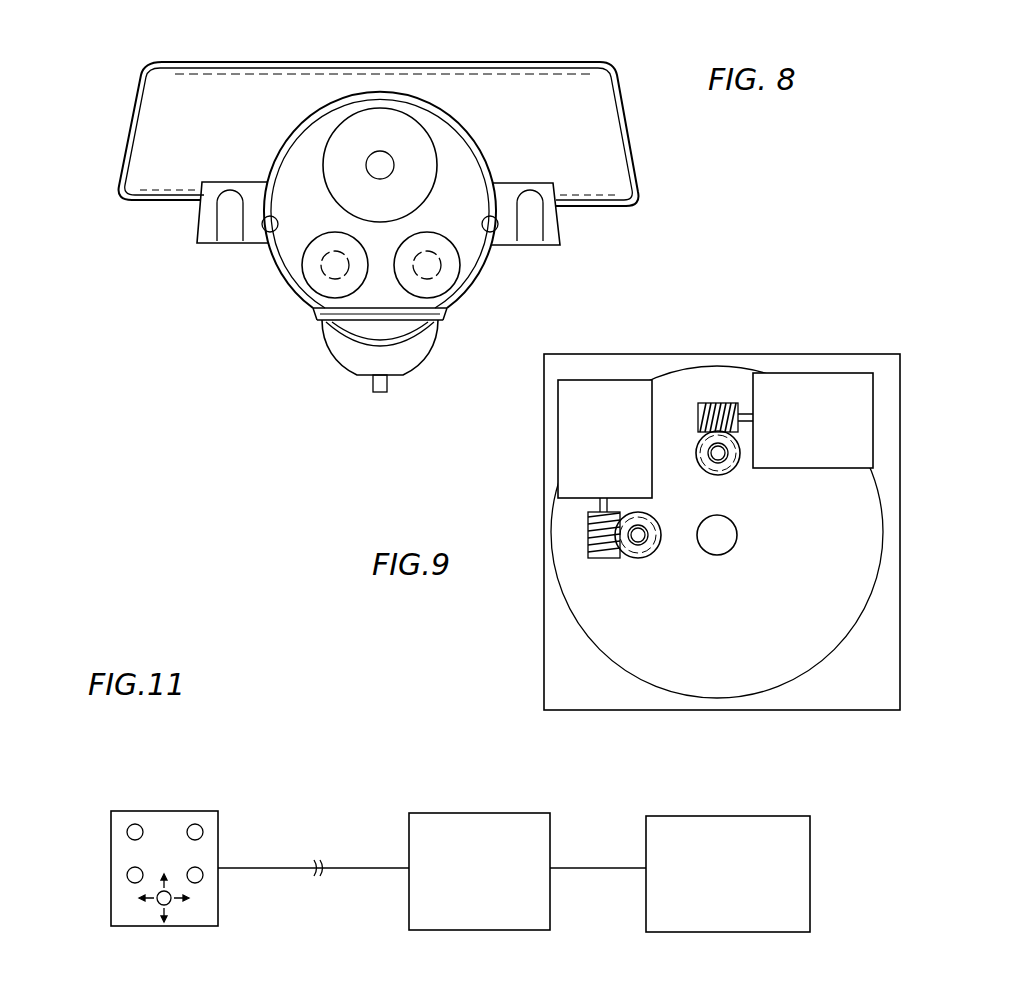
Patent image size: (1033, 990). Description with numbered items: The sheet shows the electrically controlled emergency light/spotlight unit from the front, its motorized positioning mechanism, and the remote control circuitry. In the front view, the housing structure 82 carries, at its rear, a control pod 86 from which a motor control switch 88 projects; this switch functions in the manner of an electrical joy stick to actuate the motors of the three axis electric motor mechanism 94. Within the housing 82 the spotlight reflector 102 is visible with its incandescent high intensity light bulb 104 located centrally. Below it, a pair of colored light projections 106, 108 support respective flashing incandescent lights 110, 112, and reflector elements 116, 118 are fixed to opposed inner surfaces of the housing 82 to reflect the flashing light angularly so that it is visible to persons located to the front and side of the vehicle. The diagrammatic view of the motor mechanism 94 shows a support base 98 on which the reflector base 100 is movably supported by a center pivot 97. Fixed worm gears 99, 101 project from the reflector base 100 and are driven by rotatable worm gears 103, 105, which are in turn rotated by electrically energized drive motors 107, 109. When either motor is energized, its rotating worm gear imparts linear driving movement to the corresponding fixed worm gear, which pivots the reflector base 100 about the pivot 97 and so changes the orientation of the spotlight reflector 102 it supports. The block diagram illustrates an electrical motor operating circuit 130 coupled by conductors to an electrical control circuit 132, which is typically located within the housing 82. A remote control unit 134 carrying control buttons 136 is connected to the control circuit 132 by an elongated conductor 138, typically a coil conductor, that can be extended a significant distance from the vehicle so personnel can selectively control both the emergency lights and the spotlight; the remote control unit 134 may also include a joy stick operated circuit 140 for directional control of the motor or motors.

In FIG. 8, the housing structure 82 is at (300, 120).
In FIG. 8, the control pod 86 is at (340, 366).
In FIG. 8, the motor control switch 88 is at (392, 386).
In FIG. 8, the spotlight reflector 102 is at (437, 178).
In FIG. 8, the incandescent high intensity light bulb 104 is at (390, 156).
In FIG. 8, the colored light projection 106 is at (328, 277).
In FIG. 8, the colored light projection 108 is at (431, 280).
In FIG. 8, the flashing incandescent light 110 is at (306, 281).
In FIG. 8, the flashing incandescent light 112 is at (457, 276).
In FIG. 8, the reflector element 116 is at (262, 242).
In FIG. 8, the reflector element 118 is at (500, 247).
In FIG. 9, the three axis electric motor mechanism 94 is at (786, 310).
In FIG. 9, the center pivot 97 is at (738, 537).
In FIG. 9, the support base 98 is at (857, 355).
In FIG. 9, the fixed worm gear 99 is at (652, 557).
In FIG. 9, the reflector base 100 is at (848, 656).
In FIG. 9, the fixed worm gear 101 is at (706, 448).
In FIG. 9, the worm gear 103 is at (590, 542).
In FIG. 9, the worm gear 105 is at (718, 402).
In FIG. 9, the drive motor 107 is at (562, 443).
In FIG. 9, the drive motor 109 is at (862, 400).
In FIG. 11, the electrical motor operating circuit 130 is at (742, 815).
In FIG. 11, the electrical control circuit 132 is at (447, 812).
In FIG. 11, the remote control unit 134 is at (160, 810).
In FIG. 11, the control buttons 136 is at (190, 867).
In FIG. 11, the elongated conductor 138 is at (281, 866).
In FIG. 11, the joy stick operated circuit 140 is at (169, 904).